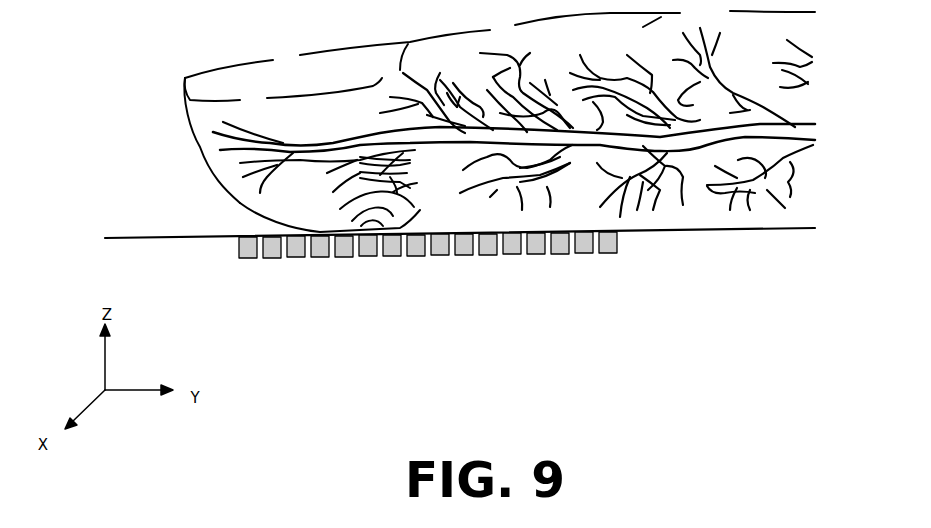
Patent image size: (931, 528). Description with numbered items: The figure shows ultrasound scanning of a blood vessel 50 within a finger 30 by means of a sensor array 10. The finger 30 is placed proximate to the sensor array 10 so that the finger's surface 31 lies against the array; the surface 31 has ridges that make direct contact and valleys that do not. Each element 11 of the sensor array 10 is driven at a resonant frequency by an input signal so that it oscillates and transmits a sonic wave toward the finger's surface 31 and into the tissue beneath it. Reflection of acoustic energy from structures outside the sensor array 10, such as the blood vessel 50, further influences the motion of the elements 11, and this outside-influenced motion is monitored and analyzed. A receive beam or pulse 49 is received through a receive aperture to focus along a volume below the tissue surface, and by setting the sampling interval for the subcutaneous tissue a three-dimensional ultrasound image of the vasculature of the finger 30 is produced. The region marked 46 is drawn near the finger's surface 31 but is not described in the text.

The finger 30 is at (207, 78).
The blood vessel 50 is at (362, 138).
The beam or pulse 49 is at (403, 165).
The pressure wave region 46 is at (343, 207).
The finger's surface 31 is at (407, 221).
The sensor array 10 is at (231, 257).
The element 11 is at (268, 259).